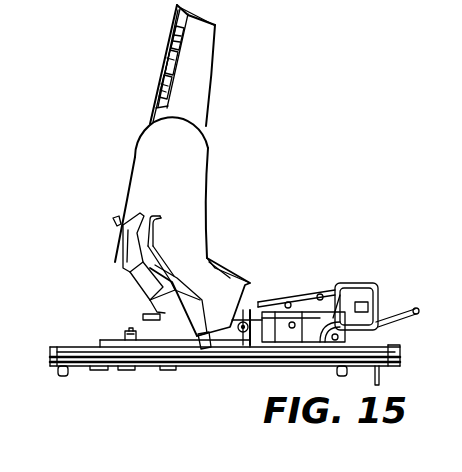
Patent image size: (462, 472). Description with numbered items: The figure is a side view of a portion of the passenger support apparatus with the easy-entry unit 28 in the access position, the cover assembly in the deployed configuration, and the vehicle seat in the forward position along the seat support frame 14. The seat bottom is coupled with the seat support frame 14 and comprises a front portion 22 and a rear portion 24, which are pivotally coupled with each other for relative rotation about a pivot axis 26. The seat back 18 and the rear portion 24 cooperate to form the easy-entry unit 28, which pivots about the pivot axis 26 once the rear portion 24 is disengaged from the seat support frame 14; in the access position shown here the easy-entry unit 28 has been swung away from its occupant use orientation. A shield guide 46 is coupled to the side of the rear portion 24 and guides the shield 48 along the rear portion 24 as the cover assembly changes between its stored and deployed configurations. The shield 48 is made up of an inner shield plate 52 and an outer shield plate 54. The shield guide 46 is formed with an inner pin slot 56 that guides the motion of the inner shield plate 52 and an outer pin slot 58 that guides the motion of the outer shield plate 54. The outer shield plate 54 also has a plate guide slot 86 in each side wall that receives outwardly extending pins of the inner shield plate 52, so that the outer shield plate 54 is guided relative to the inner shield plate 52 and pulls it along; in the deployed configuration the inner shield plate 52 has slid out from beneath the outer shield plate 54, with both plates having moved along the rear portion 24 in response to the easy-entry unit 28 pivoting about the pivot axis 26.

The seat support frame 14 is at (388, 351).
The seat back 18 is at (162, 107).
The front portion 22 is at (328, 296).
The rear portion 24 is at (266, 291).
The pivot axis 26 is at (247, 338).
The easy-entry unit 28 is at (222, 144).
The shield guide 46 is at (205, 198).
The shield 48 is at (150, 312).
The inner shield plate 52 is at (125, 278).
The outer shield plate 54 is at (148, 316).
The inner pin slot 56 is at (133, 217).
The outer pin slot 58 is at (163, 266).
The plate guide slot 86 is at (195, 328).